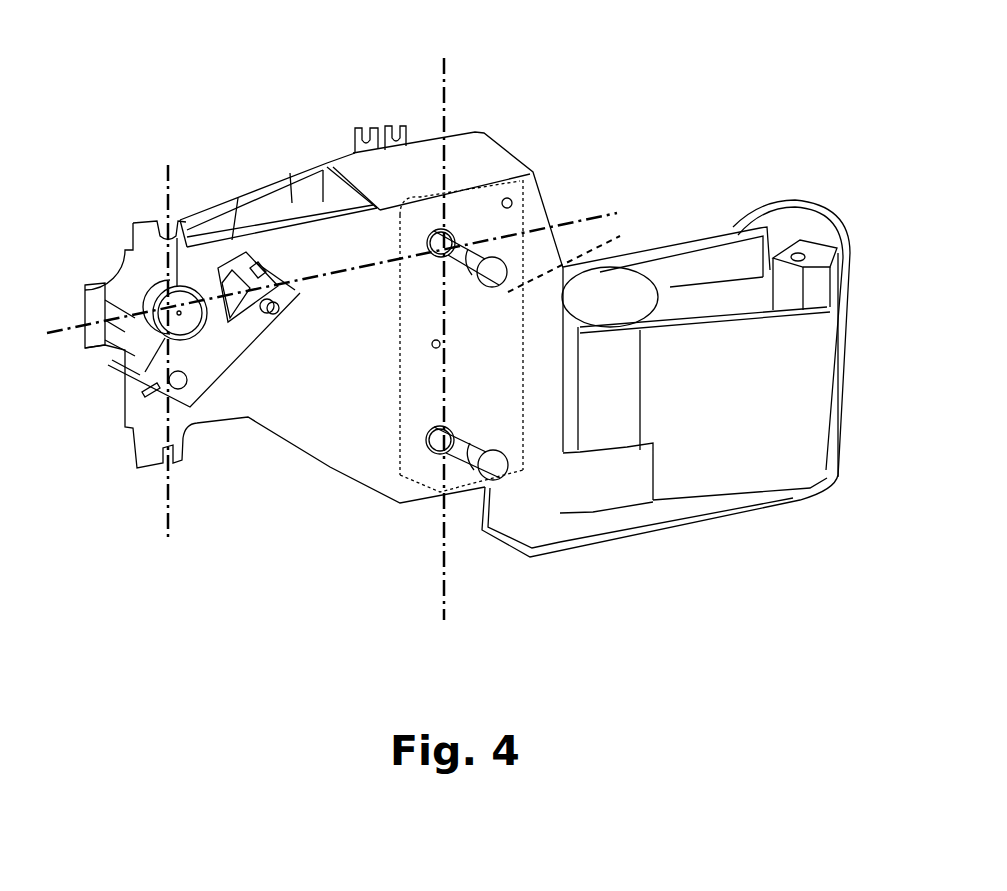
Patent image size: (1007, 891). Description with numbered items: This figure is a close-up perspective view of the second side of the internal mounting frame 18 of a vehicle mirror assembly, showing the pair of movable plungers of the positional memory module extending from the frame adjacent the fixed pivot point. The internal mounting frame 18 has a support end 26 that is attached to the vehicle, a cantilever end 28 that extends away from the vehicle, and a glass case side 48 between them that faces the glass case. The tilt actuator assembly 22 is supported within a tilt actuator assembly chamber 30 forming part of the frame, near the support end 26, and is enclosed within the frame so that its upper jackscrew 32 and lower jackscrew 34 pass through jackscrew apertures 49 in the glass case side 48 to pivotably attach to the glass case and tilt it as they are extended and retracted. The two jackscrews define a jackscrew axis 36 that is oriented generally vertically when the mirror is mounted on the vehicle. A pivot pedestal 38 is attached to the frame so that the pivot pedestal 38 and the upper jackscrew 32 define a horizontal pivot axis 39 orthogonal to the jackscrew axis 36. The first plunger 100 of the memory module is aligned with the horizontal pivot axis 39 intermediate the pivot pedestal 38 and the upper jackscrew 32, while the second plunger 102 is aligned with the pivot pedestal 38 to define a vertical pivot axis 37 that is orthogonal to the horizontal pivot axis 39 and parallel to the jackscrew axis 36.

The internal mounting frame 18 is at (640, 95).
The tilt actuator assembly 22 is at (583, 257).
The support end 26 is at (822, 194).
The cantilever end 28 is at (117, 402).
The tilt actuator assembly chamber 30 is at (494, 164).
The upper jackscrew 32 is at (457, 233).
The lower jackscrew 34 is at (432, 445).
The jackscrew axis 36 is at (443, 98).
The vertical pivot axis 37 is at (166, 182).
The pivot pedestal 38 is at (183, 293).
The horizontal pivot axis 39 is at (63, 323).
The glass case side 48 is at (302, 408).
The jackscrew apertures 49 is at (443, 233).
The first plunger 100 is at (262, 307).
The second plunger 102 is at (173, 390).